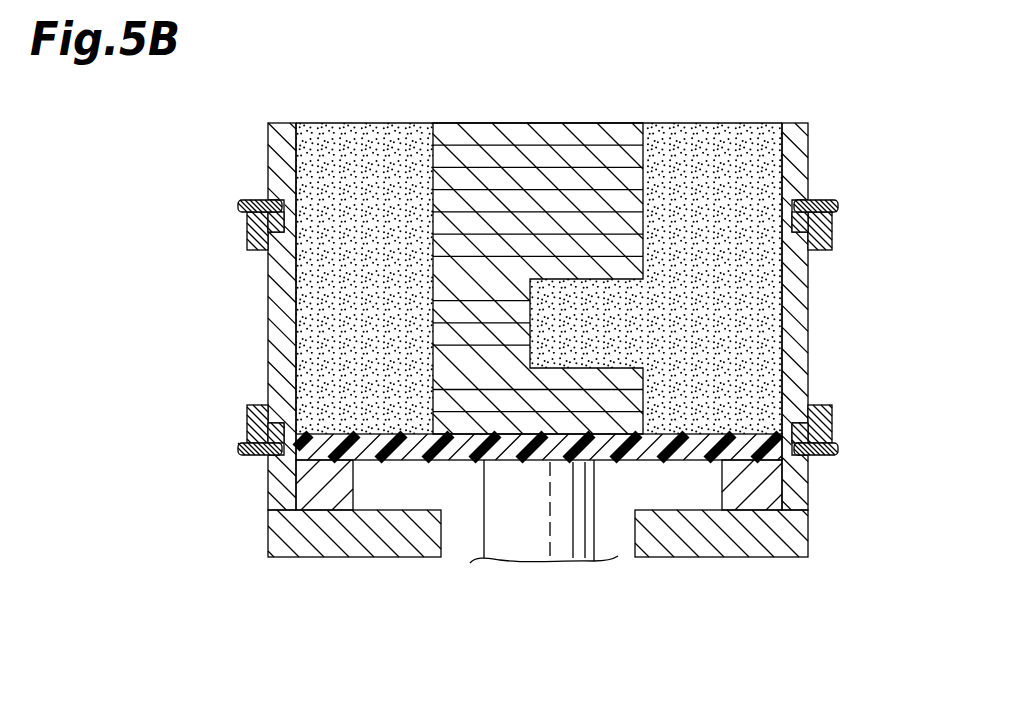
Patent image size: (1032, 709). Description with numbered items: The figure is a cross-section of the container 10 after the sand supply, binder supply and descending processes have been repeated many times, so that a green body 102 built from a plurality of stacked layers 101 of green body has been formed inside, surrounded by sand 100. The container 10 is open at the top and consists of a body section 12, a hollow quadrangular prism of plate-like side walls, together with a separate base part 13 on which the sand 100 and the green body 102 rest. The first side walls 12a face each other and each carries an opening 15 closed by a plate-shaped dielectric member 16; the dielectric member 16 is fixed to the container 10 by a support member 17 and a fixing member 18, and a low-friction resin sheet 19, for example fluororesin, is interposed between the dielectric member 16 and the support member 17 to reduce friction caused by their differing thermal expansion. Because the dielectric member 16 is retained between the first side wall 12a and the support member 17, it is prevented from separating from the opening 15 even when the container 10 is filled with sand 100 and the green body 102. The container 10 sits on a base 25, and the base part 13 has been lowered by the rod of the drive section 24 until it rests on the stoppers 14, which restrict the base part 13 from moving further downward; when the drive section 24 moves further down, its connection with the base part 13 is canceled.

The container 10 is at (822, 107).
The body section 12 is at (268, 172).
The first side wall 12a is at (276, 152).
The base part 13 is at (682, 454).
The stopper 14 is at (333, 468).
The opening 15 is at (249, 366).
The dielectric member 16 is at (276, 347).
The support member 17 is at (250, 238).
The fixing member 18 is at (238, 206).
The resin sheet 19 is at (270, 249).
The drive section 24 is at (596, 517).
The base 25 is at (268, 533).
The sand 100 is at (710, 125).
The layer of green body 101 is at (550, 227).
The green body 102 is at (538, 278).